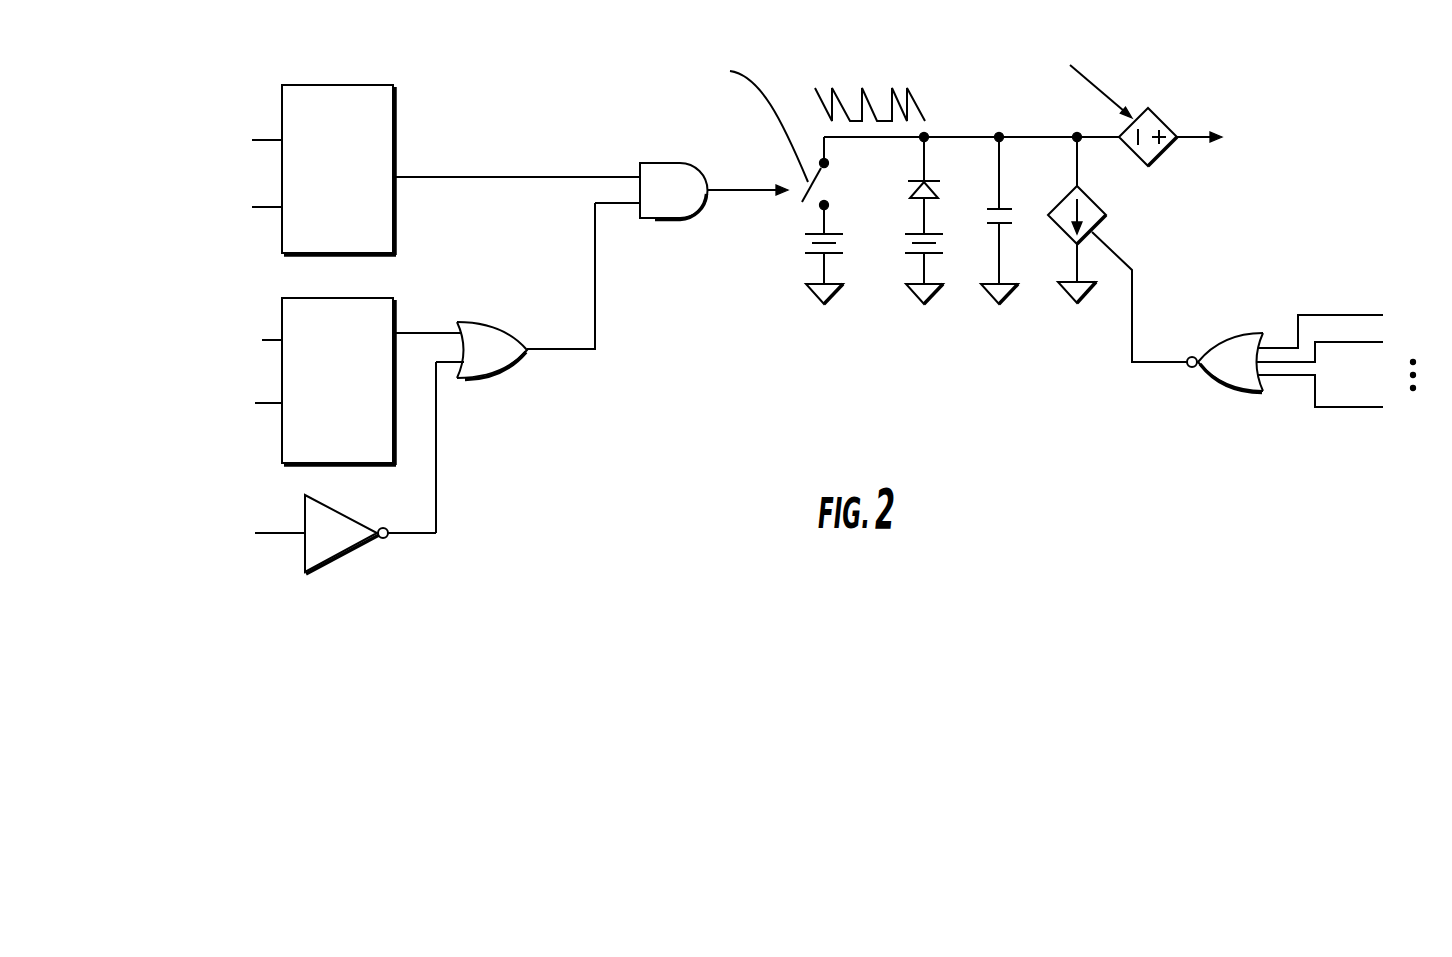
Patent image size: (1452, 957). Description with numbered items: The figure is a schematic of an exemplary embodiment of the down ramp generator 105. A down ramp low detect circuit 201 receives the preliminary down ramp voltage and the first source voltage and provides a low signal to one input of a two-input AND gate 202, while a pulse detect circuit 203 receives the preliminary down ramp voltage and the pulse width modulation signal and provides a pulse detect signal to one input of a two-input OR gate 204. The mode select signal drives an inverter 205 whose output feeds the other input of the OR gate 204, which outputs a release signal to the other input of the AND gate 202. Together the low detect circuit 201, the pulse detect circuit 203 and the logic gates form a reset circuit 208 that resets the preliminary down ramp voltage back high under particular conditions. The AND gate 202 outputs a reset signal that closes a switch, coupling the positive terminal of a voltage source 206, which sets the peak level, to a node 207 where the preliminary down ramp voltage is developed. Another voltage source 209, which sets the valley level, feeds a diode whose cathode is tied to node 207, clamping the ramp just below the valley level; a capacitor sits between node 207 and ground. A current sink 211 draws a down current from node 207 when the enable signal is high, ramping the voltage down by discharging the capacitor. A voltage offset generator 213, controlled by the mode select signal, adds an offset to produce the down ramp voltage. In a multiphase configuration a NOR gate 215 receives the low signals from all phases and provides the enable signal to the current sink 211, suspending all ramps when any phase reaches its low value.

The down ramp generator 105 is at (997, 456).
The down ramp low detect (LOWD) circuit 201 is at (350, 198).
The two-input AND gate 202 is at (662, 163).
The pulse detect (PD) circuit 203 is at (351, 410).
The two-input OR gate 204 is at (505, 360).
The inverter 205 is at (347, 546).
The voltage source 206 is at (810, 247).
The node 207 is at (924, 137).
The reset circuit 208 is at (543, 402).
The voltage source 209 is at (912, 248).
The current sink 211 is at (1053, 227).
The voltage offset generator 213 is at (1168, 151).
The multiple input NOR gate 215 is at (1248, 374).